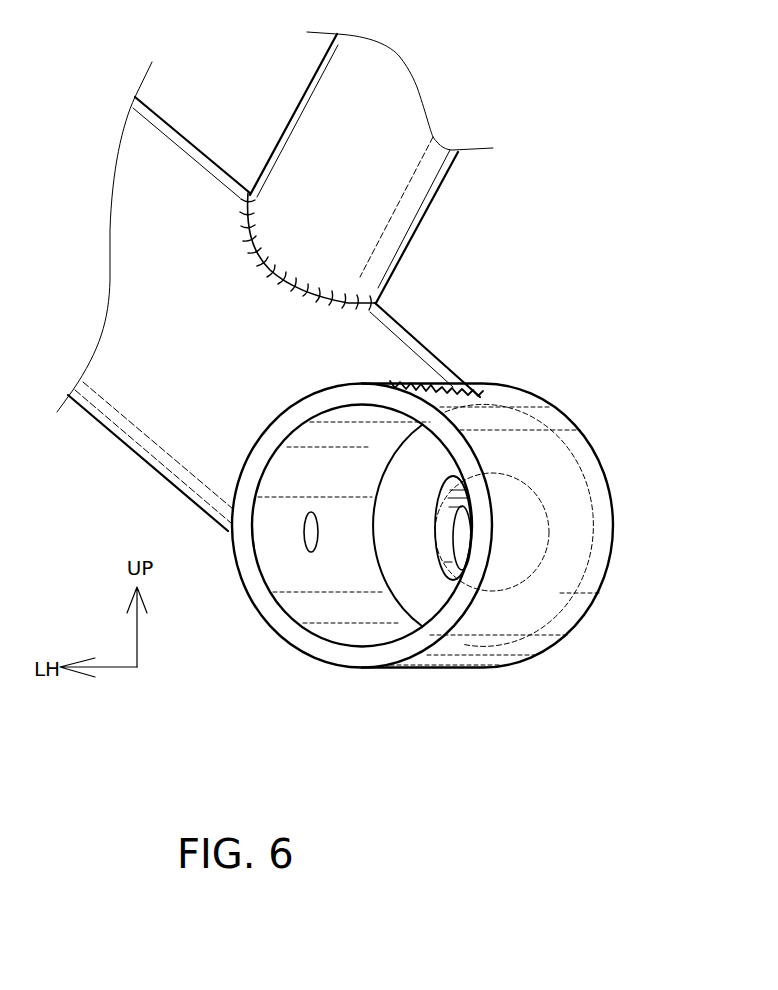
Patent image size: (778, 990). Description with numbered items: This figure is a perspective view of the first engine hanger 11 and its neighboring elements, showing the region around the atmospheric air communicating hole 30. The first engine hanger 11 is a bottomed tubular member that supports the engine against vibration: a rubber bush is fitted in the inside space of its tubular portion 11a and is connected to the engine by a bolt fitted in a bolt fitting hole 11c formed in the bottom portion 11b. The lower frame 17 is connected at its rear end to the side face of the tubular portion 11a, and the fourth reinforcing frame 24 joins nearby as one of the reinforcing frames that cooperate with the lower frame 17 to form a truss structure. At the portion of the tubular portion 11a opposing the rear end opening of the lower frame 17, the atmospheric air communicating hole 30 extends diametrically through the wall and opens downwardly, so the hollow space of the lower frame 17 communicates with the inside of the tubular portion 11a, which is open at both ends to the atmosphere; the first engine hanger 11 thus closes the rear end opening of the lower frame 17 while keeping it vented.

The first engine hanger 11 is at (448, 540).
The tubular portion 11a is at (395, 657).
The bottom portion 11b is at (467, 380).
The bolt fitting hole 11c is at (463, 535).
The lower frame 17 is at (152, 400).
The fourth reinforcing frame 24 is at (402, 162).
The atmospheric air communicating hole 30 is at (315, 545).